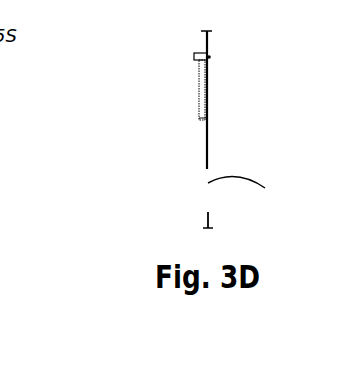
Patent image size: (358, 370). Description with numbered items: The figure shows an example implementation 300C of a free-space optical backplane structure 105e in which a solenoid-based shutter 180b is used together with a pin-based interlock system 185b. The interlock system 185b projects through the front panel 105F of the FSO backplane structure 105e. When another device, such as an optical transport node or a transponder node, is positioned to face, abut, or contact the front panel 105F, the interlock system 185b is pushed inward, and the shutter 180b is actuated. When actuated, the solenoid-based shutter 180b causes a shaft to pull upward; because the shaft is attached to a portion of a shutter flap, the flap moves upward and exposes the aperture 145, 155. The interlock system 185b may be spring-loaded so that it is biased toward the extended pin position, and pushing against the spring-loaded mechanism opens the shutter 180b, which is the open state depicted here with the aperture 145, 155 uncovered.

The FSO backplane structure 105e is at (183, 48).
The front panel 105F is at (230, 41).
The pin-based interlock system 185b is at (230, 66).
The solenoid-based shutter 180b is at (186, 140).
The aperture 145 is at (254, 186).
The aperture 155 is at (252, 213).
The example implementation 300C is at (132, 241).